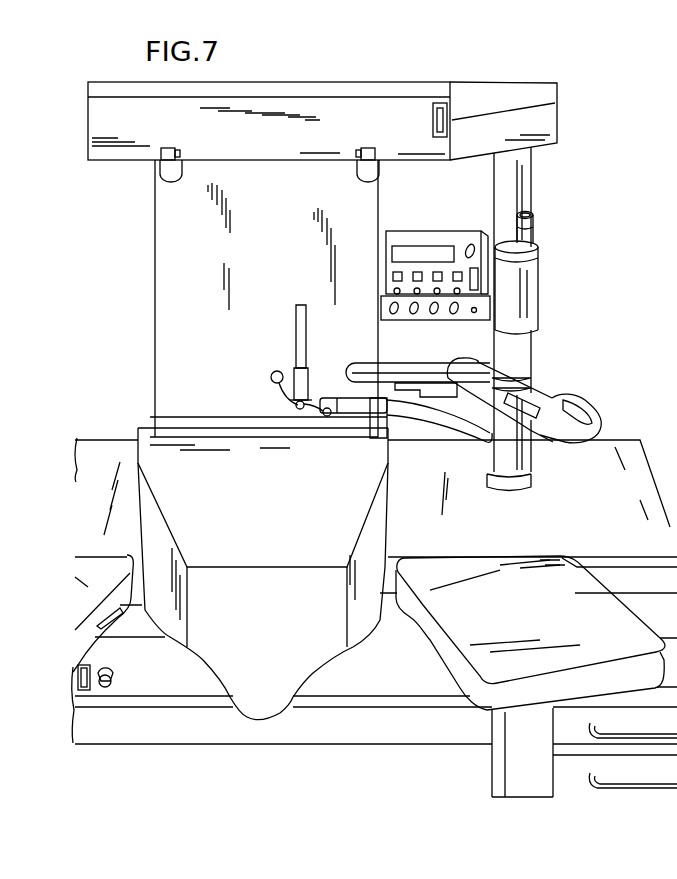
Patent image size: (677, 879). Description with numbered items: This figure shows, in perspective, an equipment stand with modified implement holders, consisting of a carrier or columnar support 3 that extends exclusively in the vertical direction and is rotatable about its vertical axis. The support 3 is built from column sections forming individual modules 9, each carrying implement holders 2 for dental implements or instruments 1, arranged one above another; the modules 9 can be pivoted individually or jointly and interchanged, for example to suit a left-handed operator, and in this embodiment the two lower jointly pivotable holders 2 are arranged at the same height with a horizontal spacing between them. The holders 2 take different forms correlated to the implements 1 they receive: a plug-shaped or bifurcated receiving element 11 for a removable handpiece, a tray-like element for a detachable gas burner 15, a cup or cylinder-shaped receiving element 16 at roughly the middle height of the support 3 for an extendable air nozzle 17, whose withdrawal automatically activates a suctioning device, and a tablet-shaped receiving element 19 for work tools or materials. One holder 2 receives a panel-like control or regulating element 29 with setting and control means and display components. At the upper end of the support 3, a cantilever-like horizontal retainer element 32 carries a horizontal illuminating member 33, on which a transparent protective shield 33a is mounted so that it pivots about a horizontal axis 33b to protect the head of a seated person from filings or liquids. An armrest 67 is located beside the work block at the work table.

The dental implement or instrument 1 is at (313, 80).
The implement holder 2 is at (485, 80).
The carrier or columnar support 3 is at (535, 337).
The module 9 is at (520, 160).
The plug-shaped or bifurcated receiving element 11 is at (528, 405).
The gas burner 15 is at (298, 333).
The cup or cylinder-shaped receiving element 16 is at (522, 290).
The extendable air nozzle 17 is at (533, 222).
The tablet-shaped receiving element 19 is at (366, 362).
The board or panel-like control or regulating element 29 is at (468, 228).
The cantilever-like horizontal retainer element 32 is at (503, 92).
The horizontal illuminating member 33 is at (386, 87).
The protective shield 33a is at (168, 263).
The horizontal axis 33b is at (165, 165).
The armrest 67 is at (485, 680).